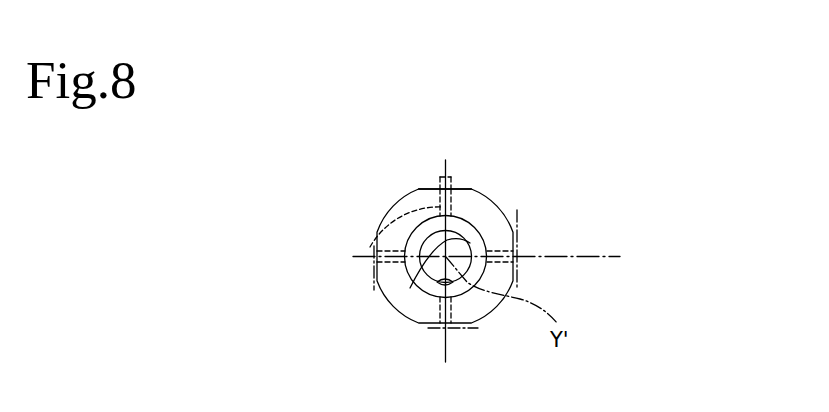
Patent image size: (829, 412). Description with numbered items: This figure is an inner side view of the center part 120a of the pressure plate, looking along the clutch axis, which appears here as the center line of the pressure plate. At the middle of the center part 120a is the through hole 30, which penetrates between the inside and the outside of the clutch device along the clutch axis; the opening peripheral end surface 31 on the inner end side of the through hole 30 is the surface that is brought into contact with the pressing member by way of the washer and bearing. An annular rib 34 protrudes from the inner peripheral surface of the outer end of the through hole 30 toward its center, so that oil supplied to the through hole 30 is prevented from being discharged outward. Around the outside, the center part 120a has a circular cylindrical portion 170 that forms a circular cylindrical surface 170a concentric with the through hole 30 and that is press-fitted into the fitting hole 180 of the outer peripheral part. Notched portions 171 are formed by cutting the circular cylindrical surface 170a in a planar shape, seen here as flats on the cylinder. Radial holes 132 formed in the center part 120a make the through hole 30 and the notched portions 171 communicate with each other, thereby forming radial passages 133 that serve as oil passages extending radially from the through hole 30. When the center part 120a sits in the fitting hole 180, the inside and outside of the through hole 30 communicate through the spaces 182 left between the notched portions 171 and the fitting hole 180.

The circular cylindrical portion 170 is at (504, 210).
The circular cylindrical surface 170a is at (445, 256).
The notched portions 171 is at (458, 190).
The fitting hole 180 is at (445, 188).
The spaces 182 is at (430, 180).
The center part 120a is at (379, 201).
The radial holes 132 is at (370, 247).
The radial passages 133 is at (362, 248).
The opening peripheral end surface 31 is at (393, 290).
The through hole 30 is at (410, 288).
The annular rib 34 is at (437, 282).